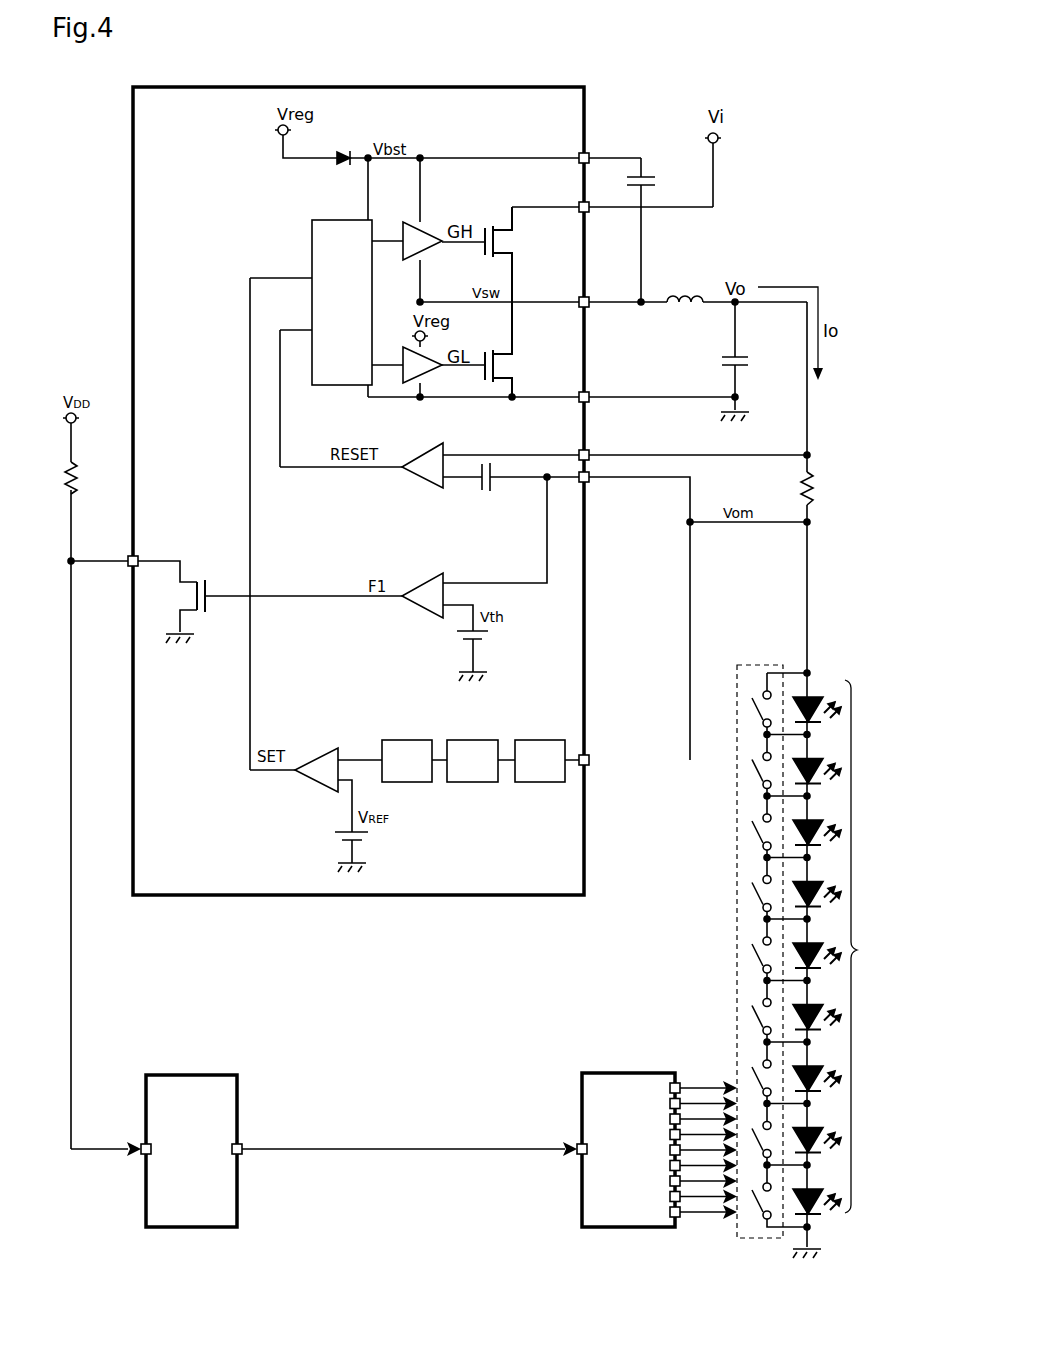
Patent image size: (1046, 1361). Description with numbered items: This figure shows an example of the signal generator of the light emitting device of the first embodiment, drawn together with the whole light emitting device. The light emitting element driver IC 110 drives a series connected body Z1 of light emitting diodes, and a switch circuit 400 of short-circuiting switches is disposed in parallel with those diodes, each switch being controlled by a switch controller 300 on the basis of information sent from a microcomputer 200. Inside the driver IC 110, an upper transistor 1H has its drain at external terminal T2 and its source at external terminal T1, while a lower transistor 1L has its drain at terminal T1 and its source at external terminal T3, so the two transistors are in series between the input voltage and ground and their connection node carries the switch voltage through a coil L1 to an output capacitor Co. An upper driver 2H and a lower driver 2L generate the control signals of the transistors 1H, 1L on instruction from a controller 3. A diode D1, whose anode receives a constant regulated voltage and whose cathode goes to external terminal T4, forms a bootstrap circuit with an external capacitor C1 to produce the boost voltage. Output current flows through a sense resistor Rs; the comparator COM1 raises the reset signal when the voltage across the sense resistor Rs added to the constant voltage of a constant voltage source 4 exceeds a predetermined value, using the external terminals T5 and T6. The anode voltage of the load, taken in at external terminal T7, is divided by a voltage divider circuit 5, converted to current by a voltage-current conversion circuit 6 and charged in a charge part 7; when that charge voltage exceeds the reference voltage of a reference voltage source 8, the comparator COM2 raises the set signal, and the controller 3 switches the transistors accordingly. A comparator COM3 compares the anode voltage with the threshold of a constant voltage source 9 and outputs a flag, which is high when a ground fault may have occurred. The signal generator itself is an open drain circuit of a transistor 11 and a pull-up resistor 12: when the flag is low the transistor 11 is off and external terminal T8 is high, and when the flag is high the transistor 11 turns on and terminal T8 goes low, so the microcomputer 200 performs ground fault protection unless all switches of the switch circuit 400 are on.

The light emitting element driver IC 110 is at (348, 87).
The controller 3 is at (341, 220).
The upper driver 2H is at (400, 224).
The lower driver 2L is at (400, 348).
The upper transistor 1H is at (521, 254).
The lower transistor 1L is at (519, 349).
The constant voltage source 4 is at (486, 494).
The transistor 11 is at (210, 600).
The pull-up resistor 12 is at (93, 478).
The constant voltage source 9 is at (492, 636).
The charge part 7 is at (409, 738).
The voltage-current conversion circuit 6 is at (474, 738).
The voltage divider circuit 5 is at (541, 738).
The reference voltage source 8 is at (372, 838).
The microcomputer 200 is at (190, 1075).
The switch controller 300 is at (626, 1073).
The switch circuit 400 is at (736, 980).
The series connected body Z1 is at (838, 964).
The diode D1 is at (343, 153).
The capacitor C1 is at (661, 230).
The coil L1 is at (685, 294).
The output capacitor Co is at (755, 361).
The sense resistor Rs is at (827, 488).
The comparator COM1 is at (418, 456).
The comparator COM2 is at (316, 761).
The comparator COM3 is at (418, 586).
The external terminal T1 is at (588, 298).
The external terminal T2 is at (588, 203).
The external terminal T3 is at (588, 394).
The external terminal T4 is at (588, 155).
The external terminal T5 is at (588, 450).
The external terminal T6 is at (590, 484).
The external terminal T7 is at (588, 755).
The external terminal T8 is at (127, 556).